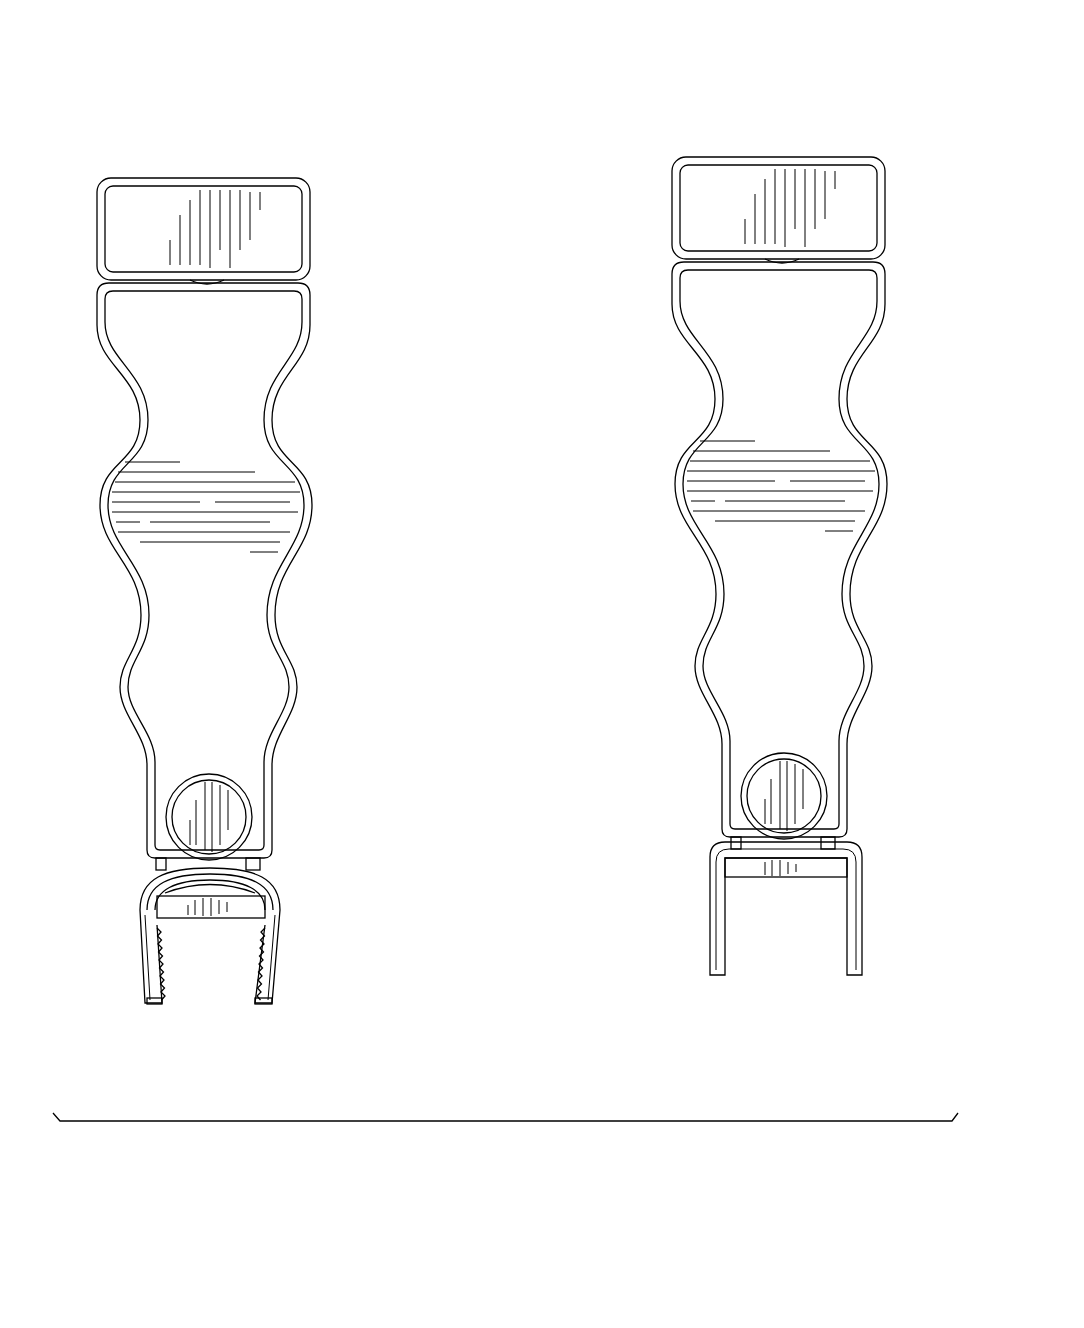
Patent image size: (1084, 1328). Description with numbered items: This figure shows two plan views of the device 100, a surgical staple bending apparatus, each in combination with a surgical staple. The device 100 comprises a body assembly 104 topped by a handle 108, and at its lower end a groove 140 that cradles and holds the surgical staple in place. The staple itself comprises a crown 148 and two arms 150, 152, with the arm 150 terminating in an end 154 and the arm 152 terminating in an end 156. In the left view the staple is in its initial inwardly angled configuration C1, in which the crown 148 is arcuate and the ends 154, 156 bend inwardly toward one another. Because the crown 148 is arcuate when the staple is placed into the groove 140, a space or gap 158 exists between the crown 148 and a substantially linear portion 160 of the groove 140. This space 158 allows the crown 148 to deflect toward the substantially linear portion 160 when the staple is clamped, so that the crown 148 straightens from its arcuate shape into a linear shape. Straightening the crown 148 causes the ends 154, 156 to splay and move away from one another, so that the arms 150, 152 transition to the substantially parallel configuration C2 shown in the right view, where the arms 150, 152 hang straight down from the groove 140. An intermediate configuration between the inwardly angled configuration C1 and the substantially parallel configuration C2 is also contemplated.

The device 100 is at (407, 68).
The body assembly 104 is at (307, 432).
The handle 108 is at (215, 198).
The groove 140 is at (150, 882).
The crown 148 is at (263, 862).
The arm 150 is at (140, 942).
The arm 152 is at (272, 968).
The end 154 is at (152, 1008).
The end 156 is at (262, 1008).
The space or gap 158 is at (273, 883).
The substantially linear portion 160 is at (277, 907).
The inwardly angled configuration C1 is at (108, 815).
The substantially parallel configuration C2 is at (650, 817).